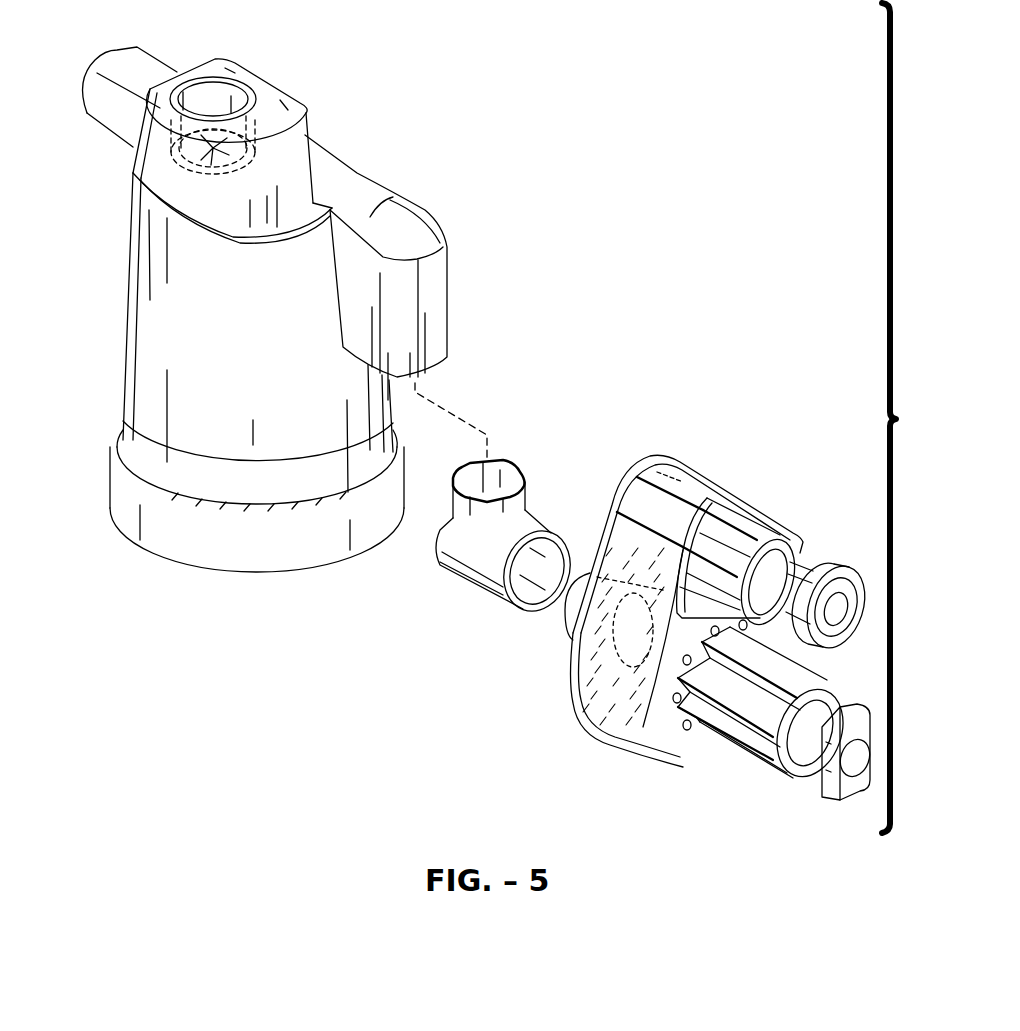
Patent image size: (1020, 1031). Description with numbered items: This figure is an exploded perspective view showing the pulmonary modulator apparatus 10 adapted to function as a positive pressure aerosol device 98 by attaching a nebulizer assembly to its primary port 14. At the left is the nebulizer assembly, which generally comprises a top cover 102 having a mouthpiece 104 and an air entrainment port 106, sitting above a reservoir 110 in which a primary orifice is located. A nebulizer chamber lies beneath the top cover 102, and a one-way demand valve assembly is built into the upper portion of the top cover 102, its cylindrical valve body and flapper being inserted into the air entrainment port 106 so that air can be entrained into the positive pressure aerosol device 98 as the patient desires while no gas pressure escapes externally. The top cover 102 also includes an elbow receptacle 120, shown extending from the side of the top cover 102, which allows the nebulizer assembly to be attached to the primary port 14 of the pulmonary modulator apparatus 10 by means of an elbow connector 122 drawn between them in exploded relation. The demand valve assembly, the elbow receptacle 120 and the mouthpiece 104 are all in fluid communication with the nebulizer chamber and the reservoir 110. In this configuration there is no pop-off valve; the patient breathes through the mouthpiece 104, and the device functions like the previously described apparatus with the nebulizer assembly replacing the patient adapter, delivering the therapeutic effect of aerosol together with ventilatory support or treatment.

The pulmonary modulator apparatus 10 is at (723, 462).
The primary port 14 is at (562, 623).
The positive pressure aerosol device 98 is at (907, 418).
The top cover 102 is at (130, 307).
The mouthpiece 104 is at (118, 50).
The air entrainment port 106 is at (235, 97).
The reservoir 110 is at (192, 563).
The elbow receptacle 120 is at (448, 317).
The elbow connector 122 is at (513, 465).